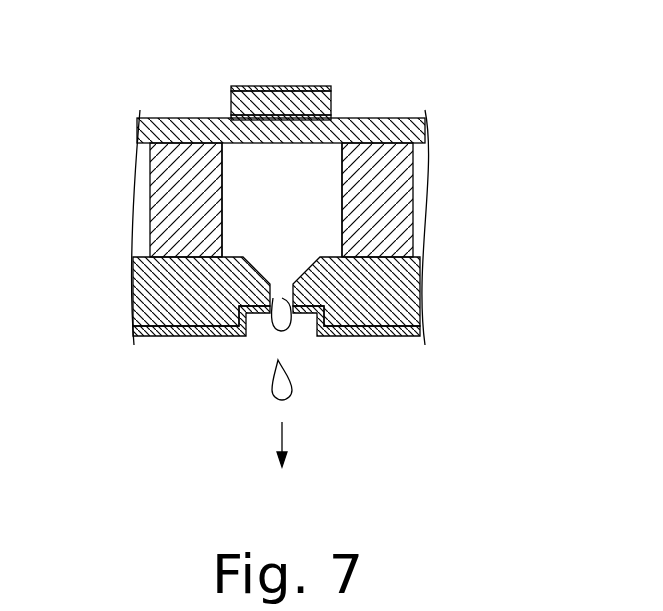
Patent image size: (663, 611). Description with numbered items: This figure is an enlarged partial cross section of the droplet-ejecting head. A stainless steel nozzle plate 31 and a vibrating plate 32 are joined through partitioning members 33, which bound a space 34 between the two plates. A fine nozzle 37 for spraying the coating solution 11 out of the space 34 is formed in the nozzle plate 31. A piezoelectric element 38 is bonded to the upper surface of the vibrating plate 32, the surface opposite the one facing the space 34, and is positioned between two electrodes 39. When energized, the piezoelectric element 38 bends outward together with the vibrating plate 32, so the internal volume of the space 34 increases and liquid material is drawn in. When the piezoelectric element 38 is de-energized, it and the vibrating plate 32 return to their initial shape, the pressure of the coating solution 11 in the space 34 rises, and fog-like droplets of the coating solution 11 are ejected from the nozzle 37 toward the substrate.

The coating solution 11 is at (293, 386).
The nozzle plate 31 is at (397, 293).
The vibrating plate 32 is at (150, 131).
The partitioning members 33 is at (158, 211).
The spaces 34 is at (328, 184).
The nozzle 37 is at (270, 324).
The piezoelectric element 38 is at (324, 100).
The electrodes 39 is at (264, 86).